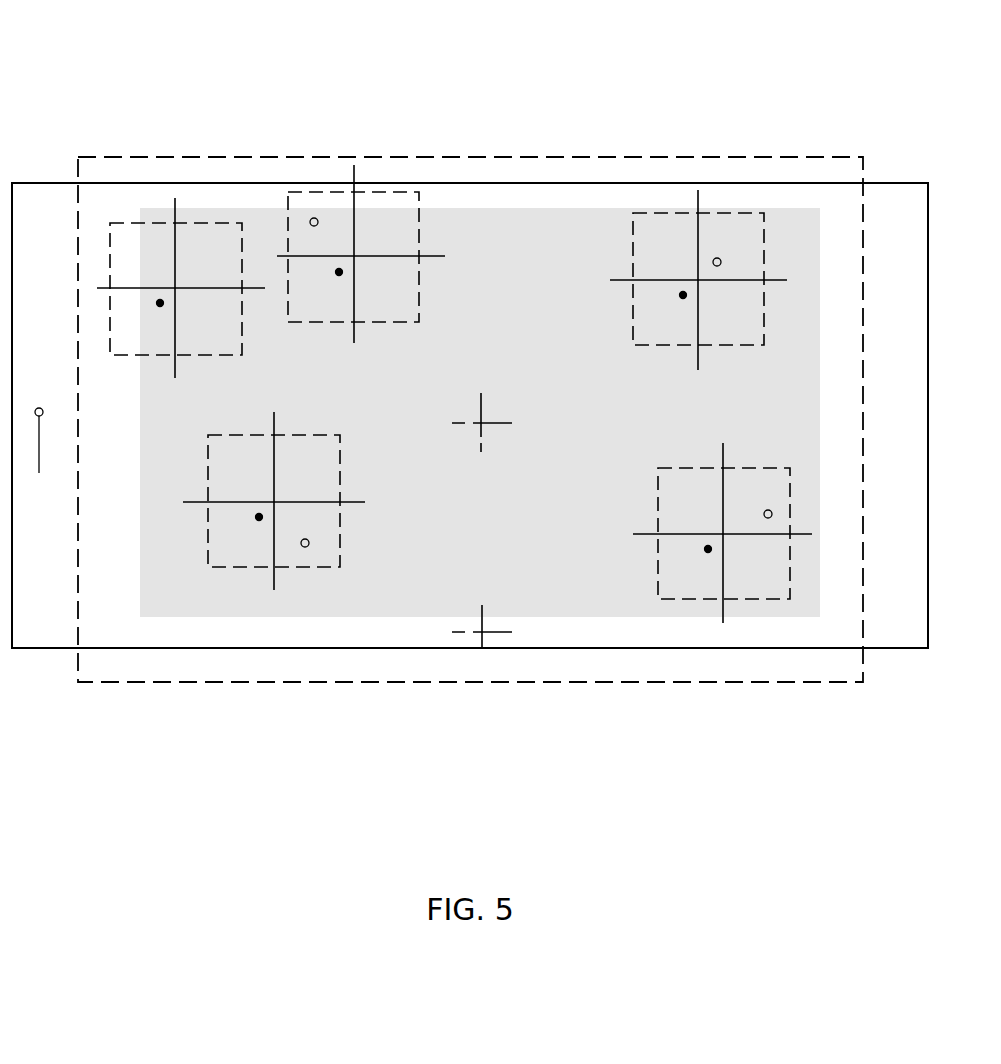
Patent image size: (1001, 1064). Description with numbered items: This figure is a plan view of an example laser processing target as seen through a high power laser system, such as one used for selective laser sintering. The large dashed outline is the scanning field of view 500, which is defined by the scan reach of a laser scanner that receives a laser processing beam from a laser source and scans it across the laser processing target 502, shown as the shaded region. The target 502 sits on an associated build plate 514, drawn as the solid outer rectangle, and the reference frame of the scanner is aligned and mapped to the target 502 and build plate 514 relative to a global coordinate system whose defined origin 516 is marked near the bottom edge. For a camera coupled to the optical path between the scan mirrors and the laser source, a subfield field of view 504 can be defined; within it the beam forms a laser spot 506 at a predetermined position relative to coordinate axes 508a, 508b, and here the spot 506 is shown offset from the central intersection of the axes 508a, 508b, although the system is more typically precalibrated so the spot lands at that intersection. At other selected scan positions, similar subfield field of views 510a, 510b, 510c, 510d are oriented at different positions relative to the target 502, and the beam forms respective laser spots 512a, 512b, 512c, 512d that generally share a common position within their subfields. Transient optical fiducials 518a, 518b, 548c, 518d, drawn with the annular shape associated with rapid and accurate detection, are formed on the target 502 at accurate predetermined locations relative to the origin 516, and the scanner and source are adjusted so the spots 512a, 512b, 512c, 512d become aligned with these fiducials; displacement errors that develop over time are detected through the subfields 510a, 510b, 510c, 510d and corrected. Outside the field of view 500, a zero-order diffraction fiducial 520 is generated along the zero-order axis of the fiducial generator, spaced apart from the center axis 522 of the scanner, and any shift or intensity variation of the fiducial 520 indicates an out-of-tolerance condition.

The scanning field of view 500 is at (576, 157).
The laser processing target 502 is at (357, 603).
The subfield field of view 504 is at (127, 223).
The laser spot 506 is at (160, 306).
The coordinate axis 508a is at (175, 207).
The coordinate axis 508b is at (88, 288).
The subfield field of view 510a is at (419, 232).
The subfield field of view 510b is at (764, 247).
The subfield field of view 510c is at (340, 460).
The subfield field of view 510d is at (790, 487).
The laser spot 512a is at (339, 275).
The laser spot 512b is at (680, 295).
The laser spot 512c is at (256, 518).
The laser spot 512d is at (704, 550).
The build plate 514 is at (380, 648).
The origin 516 is at (482, 648).
The transient optical fiducial 518a is at (314, 218).
The transient optical fiducial 518b is at (718, 258).
The third emitter 548c is at (309, 545).
The transient optical fiducial 518d is at (768, 518).
The zero-order diffraction fiducial 520 is at (40, 454).
The center axis 522 is at (489, 423).